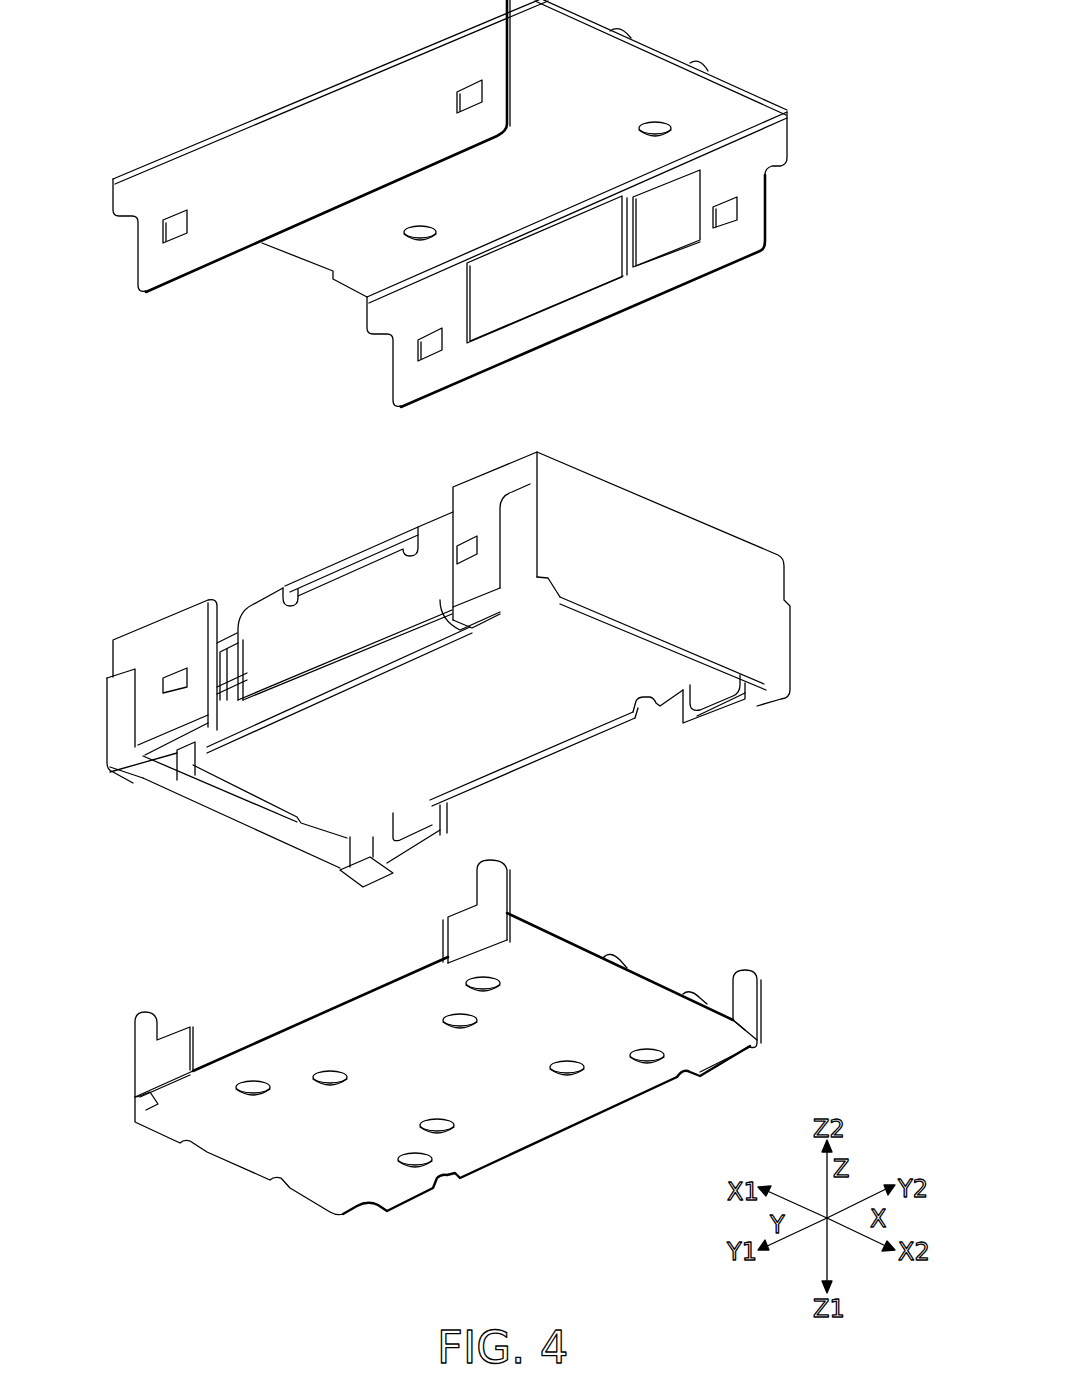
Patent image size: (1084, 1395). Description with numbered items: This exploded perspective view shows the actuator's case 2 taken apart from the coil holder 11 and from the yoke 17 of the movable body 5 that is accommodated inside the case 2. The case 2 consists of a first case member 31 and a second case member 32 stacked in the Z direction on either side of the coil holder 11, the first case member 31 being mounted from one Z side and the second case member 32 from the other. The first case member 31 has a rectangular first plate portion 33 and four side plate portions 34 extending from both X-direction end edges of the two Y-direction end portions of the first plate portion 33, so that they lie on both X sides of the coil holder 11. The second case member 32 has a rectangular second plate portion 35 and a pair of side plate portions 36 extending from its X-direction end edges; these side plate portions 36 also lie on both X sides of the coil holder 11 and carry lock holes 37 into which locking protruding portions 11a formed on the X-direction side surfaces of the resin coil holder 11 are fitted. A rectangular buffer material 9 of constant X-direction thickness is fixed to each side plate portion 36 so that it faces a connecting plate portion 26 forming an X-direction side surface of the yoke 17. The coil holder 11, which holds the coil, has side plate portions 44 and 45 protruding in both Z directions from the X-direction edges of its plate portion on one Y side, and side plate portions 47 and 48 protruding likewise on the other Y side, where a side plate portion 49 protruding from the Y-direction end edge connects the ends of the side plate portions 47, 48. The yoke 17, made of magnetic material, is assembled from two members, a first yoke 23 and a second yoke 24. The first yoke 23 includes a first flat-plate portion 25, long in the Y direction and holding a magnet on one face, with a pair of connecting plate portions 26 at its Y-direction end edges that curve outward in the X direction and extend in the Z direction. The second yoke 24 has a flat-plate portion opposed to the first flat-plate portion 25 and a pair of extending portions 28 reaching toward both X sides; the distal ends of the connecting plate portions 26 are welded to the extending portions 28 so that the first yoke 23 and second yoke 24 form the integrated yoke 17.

The case 2 is at (489, 619).
The second case member 32 is at (491, 203).
The second plate portion 35 is at (653, 62).
The side plate portions 36 is at (203, 257).
The lock holes 37 is at (163, 233).
The buffer material 9 is at (563, 283).
The coil holder 11 is at (506, 656).
The locking protruding portions 11a is at (464, 538).
The movable body 5 is at (336, 570).
The yoke 17 is at (336, 570).
The first yoke 23 is at (260, 606).
The second yoke 24 is at (340, 563).
The extending portions 28 is at (393, 537).
The connecting plate portions 26 is at (432, 540).
The side plate portion 47 is at (508, 482).
The side plate portion 49 is at (693, 530).
The first flat-plate portion 25 is at (507, 740).
The side plate portion 45 is at (180, 707).
The side plate portion 48 is at (714, 705).
The side plate portion 44 is at (428, 850).
The first case member 31 is at (450, 1049).
The first plate portion 33 is at (632, 987).
The side plate portions 34 is at (145, 1043).